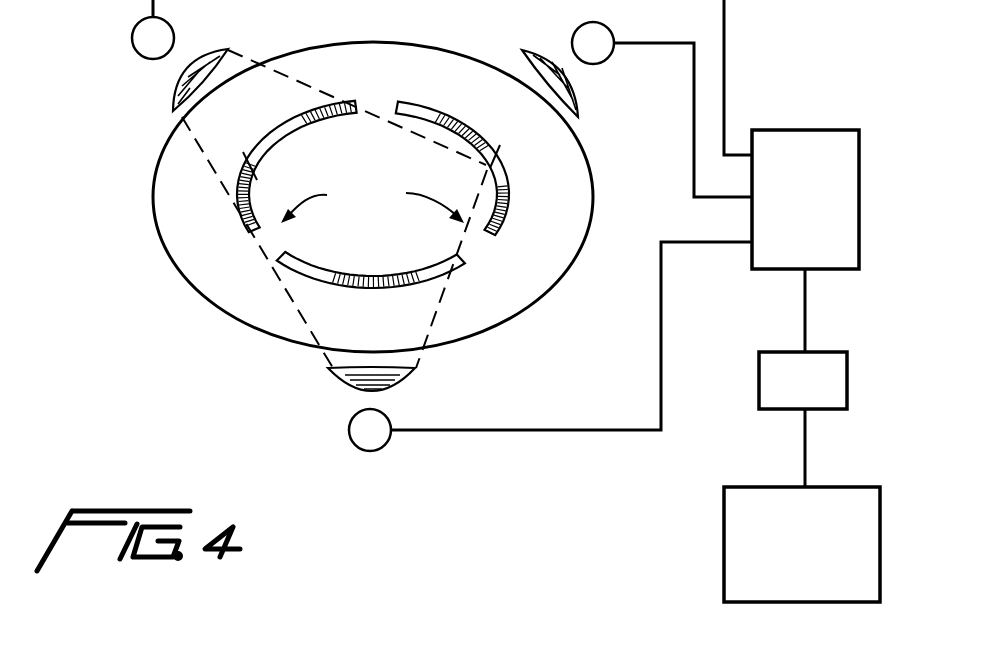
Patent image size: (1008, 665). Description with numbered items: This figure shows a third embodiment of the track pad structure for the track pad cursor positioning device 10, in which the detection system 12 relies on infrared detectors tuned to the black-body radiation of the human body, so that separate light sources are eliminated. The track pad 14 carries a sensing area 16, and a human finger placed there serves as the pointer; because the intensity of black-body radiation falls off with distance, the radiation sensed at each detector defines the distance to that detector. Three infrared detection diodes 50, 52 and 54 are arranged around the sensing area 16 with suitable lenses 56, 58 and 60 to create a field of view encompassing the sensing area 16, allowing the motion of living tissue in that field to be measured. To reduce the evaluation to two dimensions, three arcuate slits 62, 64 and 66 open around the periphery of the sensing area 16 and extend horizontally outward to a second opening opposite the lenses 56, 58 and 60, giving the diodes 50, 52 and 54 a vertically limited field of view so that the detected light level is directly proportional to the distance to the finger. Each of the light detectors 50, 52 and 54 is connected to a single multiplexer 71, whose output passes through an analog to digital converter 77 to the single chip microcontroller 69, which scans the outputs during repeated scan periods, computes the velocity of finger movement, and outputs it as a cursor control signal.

The track pad cursor positioning device 10 is at (590, 503).
The detection system 12 is at (186, 333).
The track pad 14 is at (203, 247).
The sensing area 16 is at (285, 170).
The infrared detection diode 50 is at (133, 33).
The infrared detection diode 52 is at (604, 22).
The infrared detection diode 54 is at (347, 434).
The lens 56 is at (170, 88).
The lens 58 is at (536, 49).
The lens 60 is at (337, 383).
The arcuate slit 62 is at (302, 109).
The arcuate slit 64 is at (405, 101).
The arcuate slit 66 is at (433, 286).
The single chip microcontroller 69 is at (770, 603).
The multiplexer 71 is at (838, 130).
The analog to digital converter 77 is at (759, 386).